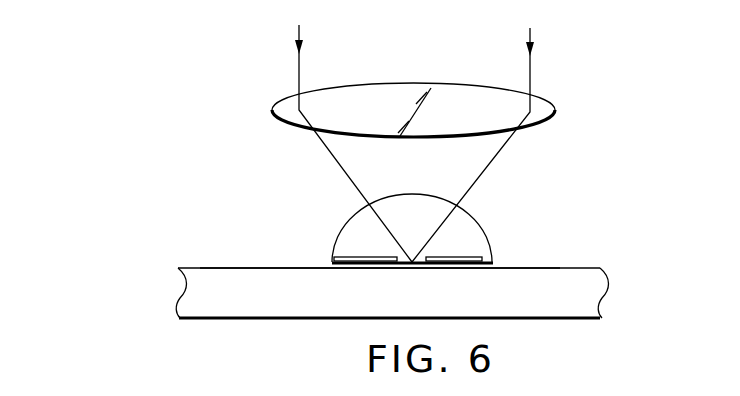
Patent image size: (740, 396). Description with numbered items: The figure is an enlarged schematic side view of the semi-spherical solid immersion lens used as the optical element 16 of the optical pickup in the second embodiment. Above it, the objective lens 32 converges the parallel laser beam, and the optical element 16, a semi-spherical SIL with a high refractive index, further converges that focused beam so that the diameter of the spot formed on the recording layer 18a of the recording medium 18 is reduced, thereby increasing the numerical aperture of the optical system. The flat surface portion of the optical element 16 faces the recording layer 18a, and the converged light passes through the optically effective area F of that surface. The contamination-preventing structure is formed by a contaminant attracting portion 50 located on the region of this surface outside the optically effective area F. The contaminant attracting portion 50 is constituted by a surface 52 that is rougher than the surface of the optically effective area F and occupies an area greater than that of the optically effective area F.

The objective lens 32 is at (276, 105).
The optical element 16 is at (347, 221).
The contaminant attracting portion 50 is at (362, 268).
The surface 52 is at (481, 257).
The optically effective area F is at (416, 271).
The recording medium 18 is at (168, 292).
The recording layer 18a is at (224, 277).